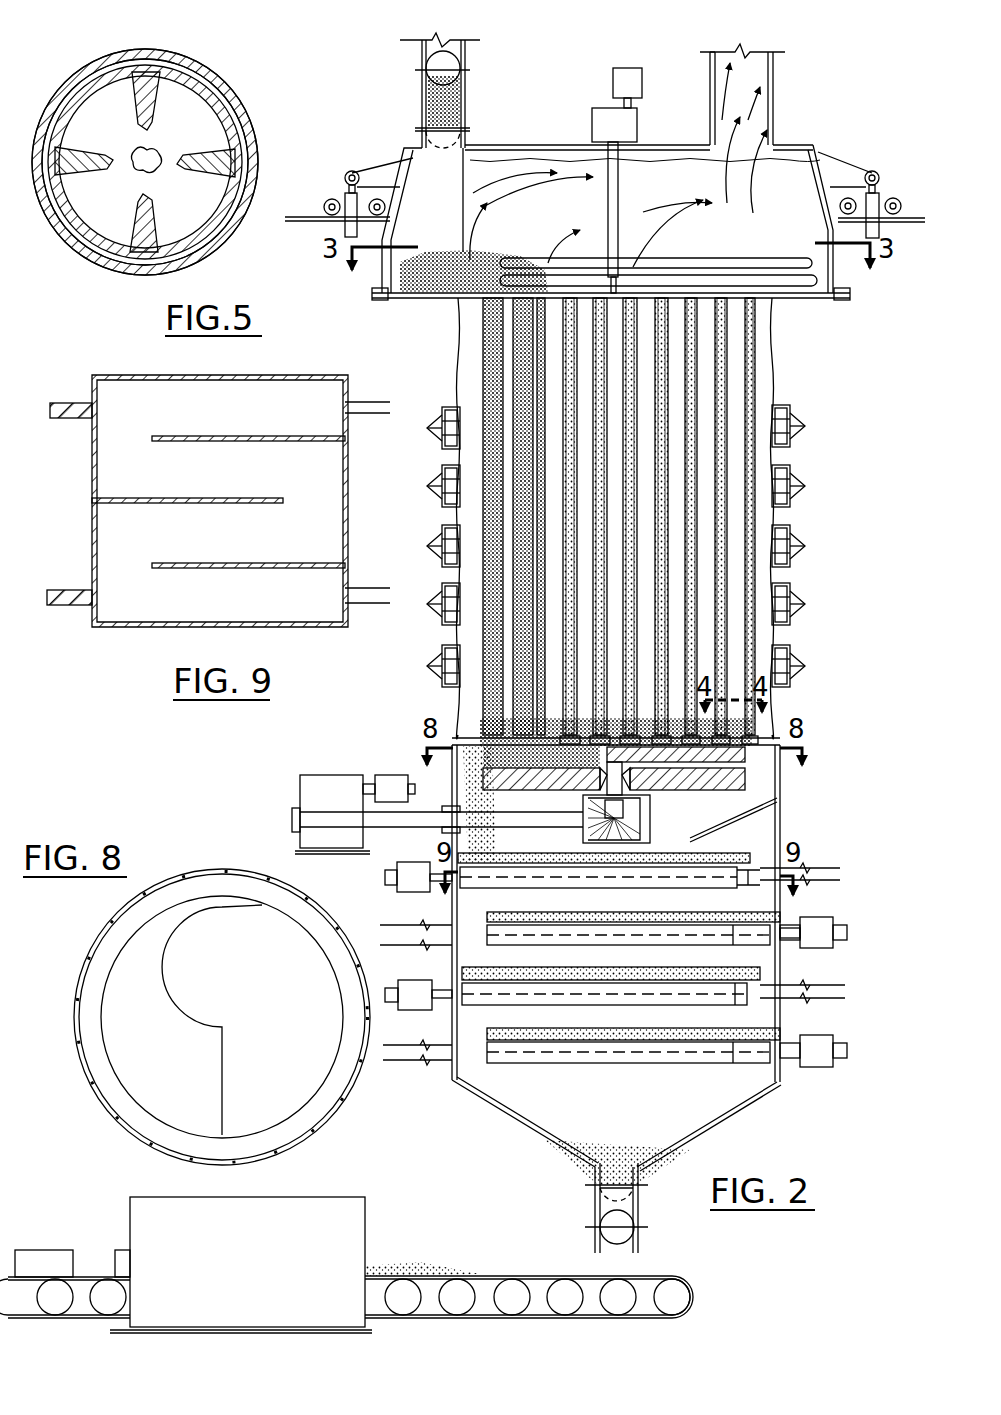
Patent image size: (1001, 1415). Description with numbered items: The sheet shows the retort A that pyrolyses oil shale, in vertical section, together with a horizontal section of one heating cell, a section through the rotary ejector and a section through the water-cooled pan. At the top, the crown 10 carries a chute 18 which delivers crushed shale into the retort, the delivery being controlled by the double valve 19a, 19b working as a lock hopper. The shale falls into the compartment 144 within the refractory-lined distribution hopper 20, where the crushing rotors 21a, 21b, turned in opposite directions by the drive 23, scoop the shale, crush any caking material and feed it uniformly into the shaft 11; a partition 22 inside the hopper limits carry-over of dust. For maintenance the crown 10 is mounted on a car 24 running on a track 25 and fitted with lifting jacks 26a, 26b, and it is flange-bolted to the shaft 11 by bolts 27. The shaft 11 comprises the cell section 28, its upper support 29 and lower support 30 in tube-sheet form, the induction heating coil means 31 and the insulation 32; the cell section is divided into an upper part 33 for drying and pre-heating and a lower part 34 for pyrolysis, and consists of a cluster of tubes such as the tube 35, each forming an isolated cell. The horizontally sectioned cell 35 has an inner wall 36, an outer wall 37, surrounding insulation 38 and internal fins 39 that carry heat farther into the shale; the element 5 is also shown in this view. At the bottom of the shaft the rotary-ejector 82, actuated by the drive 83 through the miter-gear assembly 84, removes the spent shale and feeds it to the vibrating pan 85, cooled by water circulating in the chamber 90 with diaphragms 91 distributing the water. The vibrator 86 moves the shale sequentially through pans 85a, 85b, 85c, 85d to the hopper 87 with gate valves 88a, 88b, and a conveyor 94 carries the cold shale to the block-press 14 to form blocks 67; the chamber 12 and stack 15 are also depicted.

In FIG. 5, the rotary valve rotor 5 is at (88, 88).
In FIG. 5, the cell tube 35 is at (98, 72).
In FIG. 2, the cell tube 35 is at (560, 395).
In FIG. 5, the inner wall 36 is at (182, 60).
In FIG. 5, the outer wall 37 is at (148, 50).
In FIG. 5, the insulation 38 is at (65, 86).
In FIG. 5, the internal fins 39 is at (146, 160).
In FIG. 9, the chamber 90 is at (228, 487).
In FIG. 2, the chamber 90 is at (630, 887).
In FIG. 9, the diaphragms 91 is at (205, 436).
In FIG. 8, the rotary-ejector 82 is at (225, 925).
In FIG. 2, the rotary-ejector 82 is at (727, 780).
In FIG. 2, the crown 10 is at (822, 140).
In FIG. 2, the shaft 11 is at (735, 357).
In FIG. 2, the cooling chamber 12 is at (790, 820).
In FIG. 2, the block-press 14 is at (256, 1266).
In FIG. 2, the exhaust stack 15 is at (765, 63).
In FIG. 2, the chute 18 is at (466, 90).
In FIG. 2, the double valve upper valve 19a is at (458, 66).
In FIG. 2, the double valve lower valve 19b is at (466, 126).
In FIG. 2, the distribution hopper 20 is at (652, 203).
In FIG. 2, the crushing rotor 21a is at (747, 263).
In FIG. 2, the crushing rotor 21b is at (750, 283).
In FIG. 2, the partition 22 is at (462, 204).
In FIG. 2, the drive 23 is at (613, 76).
In FIG. 2, the car 24 is at (380, 165).
In FIG. 2, the track 25 is at (302, 215).
In FIG. 2, the lifting jack 26a is at (348, 178).
In FIG. 2, the lifting jack 26b is at (876, 190).
In FIG. 2, the bolts 27 is at (382, 300).
In FIG. 2, the cell section 28 is at (549, 462).
In FIG. 2, the upper support 29 is at (658, 297).
In FIG. 2, the lower support 30 is at (454, 736).
In FIG. 2, the induction heating coil means 31 is at (426, 437).
In FIG. 2, the insulation 32 is at (762, 322).
In FIG. 2, the drying and pre-heating part 33 is at (485, 355).
In FIG. 2, the pyrolysis part 34 is at (488, 508).
In FIG. 2, the drive 83 is at (318, 785).
In FIG. 2, the miter-gear assembly 84 is at (650, 800).
In FIG. 2, the vibrating pan 85 is at (712, 853).
In FIG. 2, the first pan 85a is at (520, 856).
In FIG. 2, the second pan 85b is at (560, 915).
In FIG. 2, the third pan 85c is at (565, 972).
In FIG. 2, the fourth pan 85d is at (575, 1030).
In FIG. 2, the vibrator 86 is at (403, 862).
In FIG. 2, the hopper 87 is at (700, 1118).
In FIG. 2, the gate valve 88a is at (640, 1186).
In FIG. 2, the gate valve 88b is at (622, 1228).
In FIG. 2, the conveyor 94 is at (680, 1278).
In FIG. 2, the blocks 67 is at (42, 1258).
In FIG. 2, the compartment 144 is at (446, 239).
In FIG. 2, the retort A is at (773, 386).